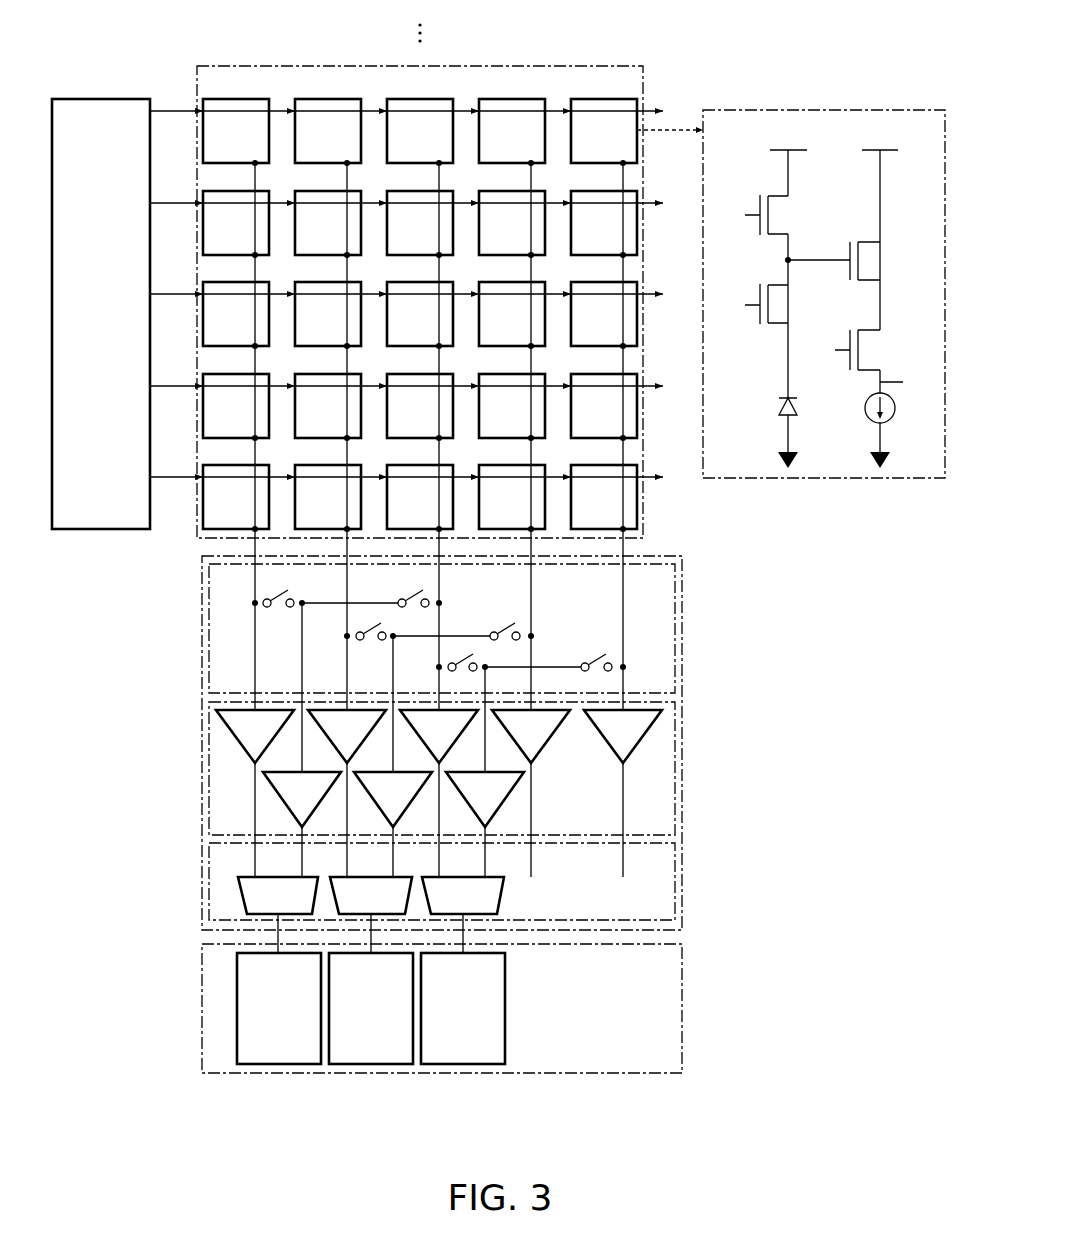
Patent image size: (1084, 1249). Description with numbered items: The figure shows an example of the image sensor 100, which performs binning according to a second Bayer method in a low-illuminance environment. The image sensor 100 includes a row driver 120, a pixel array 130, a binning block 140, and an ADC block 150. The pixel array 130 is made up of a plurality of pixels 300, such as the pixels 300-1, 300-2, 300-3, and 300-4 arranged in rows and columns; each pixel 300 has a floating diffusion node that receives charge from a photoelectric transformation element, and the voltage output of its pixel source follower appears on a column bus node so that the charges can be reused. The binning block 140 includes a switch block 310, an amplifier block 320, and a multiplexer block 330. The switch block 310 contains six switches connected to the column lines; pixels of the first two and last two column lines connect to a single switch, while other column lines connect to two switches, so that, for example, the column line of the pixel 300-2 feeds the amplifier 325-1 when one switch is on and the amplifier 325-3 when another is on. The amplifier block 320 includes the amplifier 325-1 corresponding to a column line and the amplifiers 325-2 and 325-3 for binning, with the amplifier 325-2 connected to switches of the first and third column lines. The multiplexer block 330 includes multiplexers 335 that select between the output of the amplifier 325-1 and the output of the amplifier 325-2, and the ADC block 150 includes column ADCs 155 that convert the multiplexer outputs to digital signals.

The image sensor 100 is at (890, 30).
The row driver 120 is at (101, 99).
The pixel array 130 is at (596, 66).
The binning block 140 is at (633, 556).
The ADC block 150 is at (639, 1073).
The column ADC 155 is at (237, 1007).
The pixel 300 is at (897, 110).
The pixel 300-1 is at (259, 99).
The pixel 300-2 is at (445, 99).
The pixel 300-3 is at (259, 282).
The pixel 300-4 is at (445, 282).
The switch block 310 is at (677, 631).
The amplifier block 320 is at (677, 771).
The amplifier 325-1 is at (236, 737).
The amplifier 325-2 is at (280, 796).
The amplifier 325-3 is at (510, 796).
The multiplexer block 330 is at (677, 887).
The multiplexer 335 is at (240, 897).